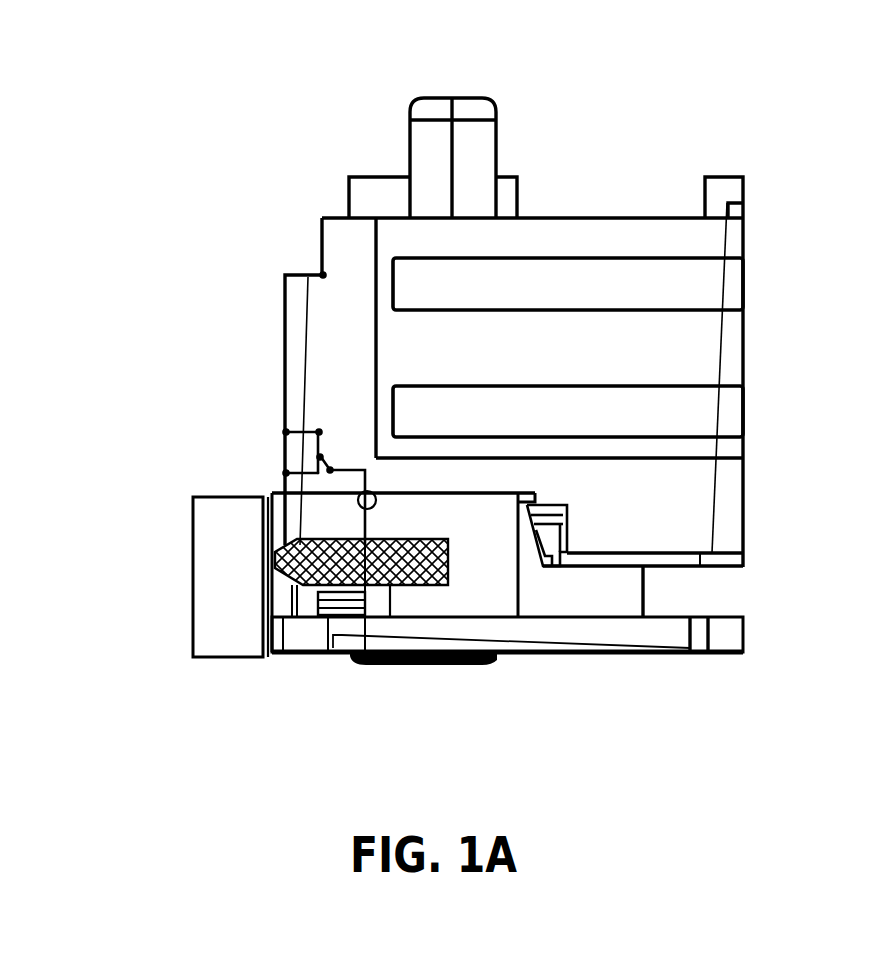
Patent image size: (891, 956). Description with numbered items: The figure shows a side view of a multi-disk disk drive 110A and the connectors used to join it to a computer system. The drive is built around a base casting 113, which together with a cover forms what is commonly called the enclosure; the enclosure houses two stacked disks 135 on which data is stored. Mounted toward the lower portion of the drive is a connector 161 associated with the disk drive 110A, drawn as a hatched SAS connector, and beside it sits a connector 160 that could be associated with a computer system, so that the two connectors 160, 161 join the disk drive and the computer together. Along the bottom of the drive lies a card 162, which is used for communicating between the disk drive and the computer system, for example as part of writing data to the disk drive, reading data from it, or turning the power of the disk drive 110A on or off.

The multi-disk disk drive 110A is at (701, 56).
The base casting 113 is at (742, 506).
The disk 135 is at (745, 284).
The connector 160 is at (222, 600).
The connector 161 is at (486, 572).
The card 162 is at (631, 672).